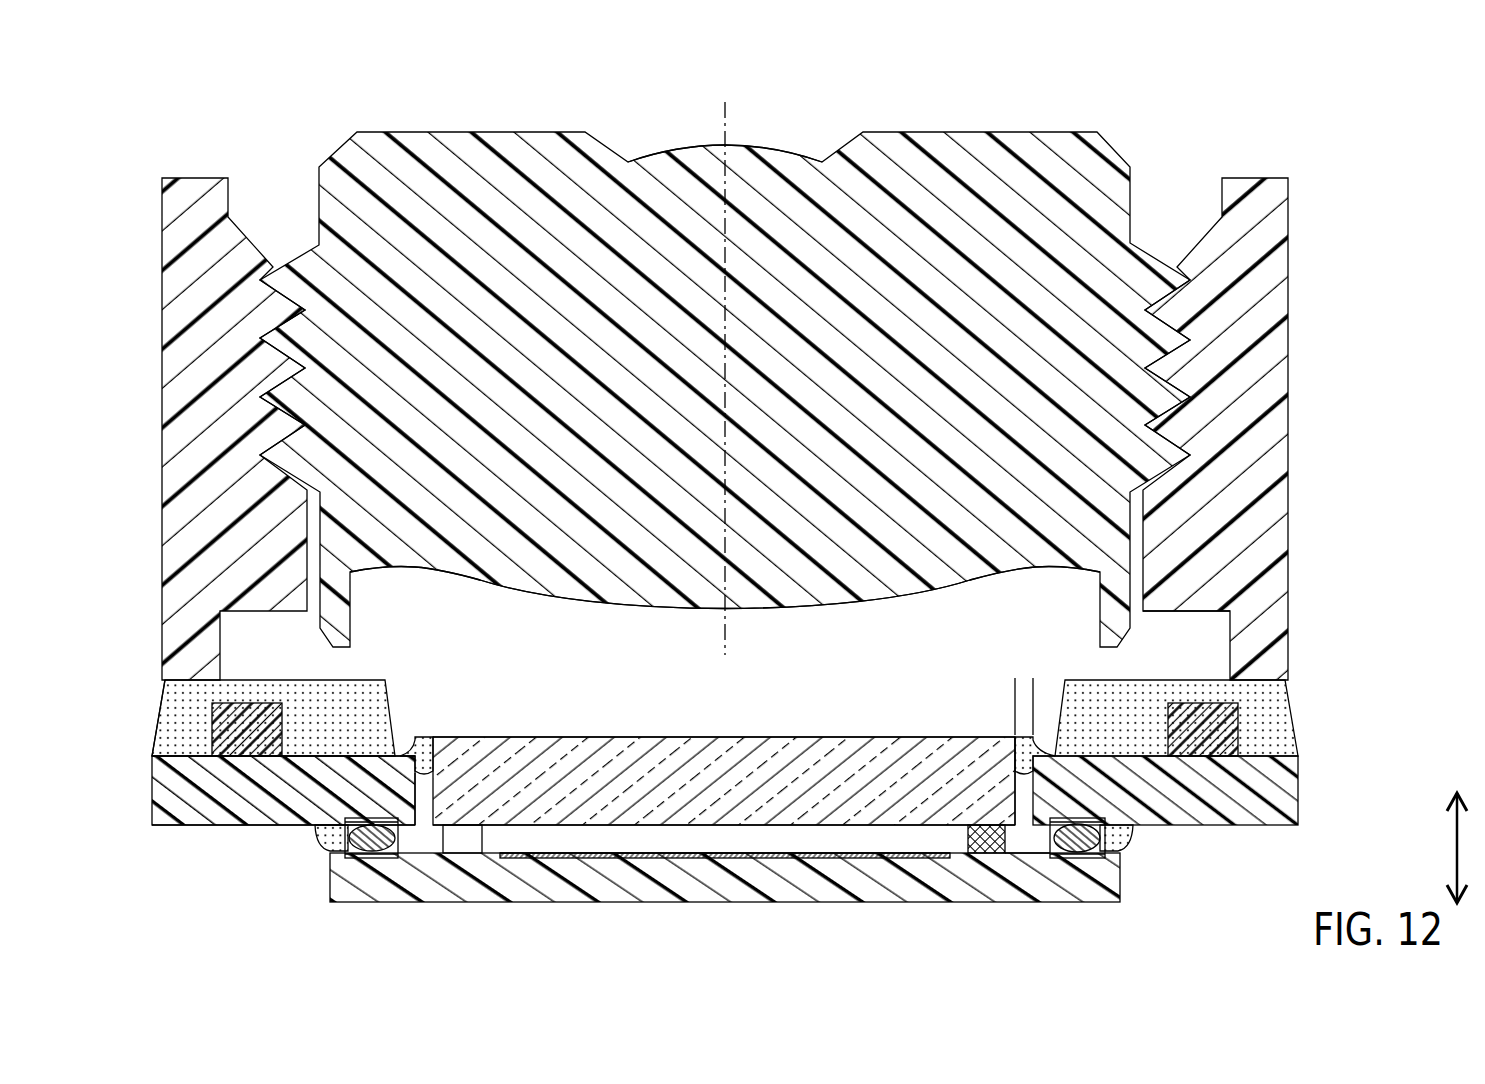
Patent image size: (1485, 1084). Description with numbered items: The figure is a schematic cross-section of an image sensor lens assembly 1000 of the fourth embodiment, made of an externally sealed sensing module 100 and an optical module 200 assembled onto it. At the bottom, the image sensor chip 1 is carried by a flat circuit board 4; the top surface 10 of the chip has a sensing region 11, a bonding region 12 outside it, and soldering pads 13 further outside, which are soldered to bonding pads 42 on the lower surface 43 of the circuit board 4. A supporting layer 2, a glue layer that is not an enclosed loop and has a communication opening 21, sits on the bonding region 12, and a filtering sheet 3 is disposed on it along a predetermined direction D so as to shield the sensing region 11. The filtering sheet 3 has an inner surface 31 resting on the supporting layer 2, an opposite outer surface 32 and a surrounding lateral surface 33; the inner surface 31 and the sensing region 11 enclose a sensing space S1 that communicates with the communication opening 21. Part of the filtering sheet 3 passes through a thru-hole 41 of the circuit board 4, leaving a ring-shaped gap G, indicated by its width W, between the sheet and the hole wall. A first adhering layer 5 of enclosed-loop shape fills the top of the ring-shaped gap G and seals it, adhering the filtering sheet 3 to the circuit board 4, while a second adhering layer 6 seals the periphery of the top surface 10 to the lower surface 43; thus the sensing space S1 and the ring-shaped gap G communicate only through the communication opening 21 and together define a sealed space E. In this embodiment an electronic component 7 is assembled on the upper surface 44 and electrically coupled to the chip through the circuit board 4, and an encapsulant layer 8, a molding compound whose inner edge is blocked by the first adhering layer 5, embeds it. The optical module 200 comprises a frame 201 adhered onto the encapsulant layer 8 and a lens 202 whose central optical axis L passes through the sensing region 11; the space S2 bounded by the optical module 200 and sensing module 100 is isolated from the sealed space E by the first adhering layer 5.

The image sensor chip 1 is at (1115, 878).
The supporting layer 2 is at (987, 848).
The filtering sheet 3 is at (562, 735).
The circuit board 4 is at (150, 789).
The first adhering layer 5 is at (419, 736).
The second adhering layer 6 is at (318, 845).
The electronic component 7 is at (208, 721).
The encapsulant layer 8 is at (262, 678).
The top surface 10 is at (1313, 57).
The sensing region 11 is at (711, 847).
The bonding region 12 is at (1013, 846).
The soldering pads 13 is at (378, 828).
The communication opening 21 is at (465, 835).
The inner surface 31 is at (871, 829).
The outer surface 32 is at (851, 734).
The surrounding lateral surface 33 is at (338, 853).
The thru-hole 41 is at (426, 808).
The bonding pads 42 is at (353, 813).
The lower surface 43 is at (170, 830).
The upper surface 44 is at (169, 748).
The sensing module 100 is at (1305, 784).
The optical module 200 is at (1292, 654).
The frame 201 is at (1270, 273).
The lens 202 is at (950, 158).
The image sensor lens assembly 1000 is at (1395, 648).
The central optical axis L is at (726, 118).
The gap width W is at (1058, 683).
The predetermined direction D is at (1446, 848).
The ring-shaped gap G is at (1134, 840).
The sensing space S1 is at (612, 835).
The space S2 is at (1185, 655).
The sealed space E is at (1397, 57).